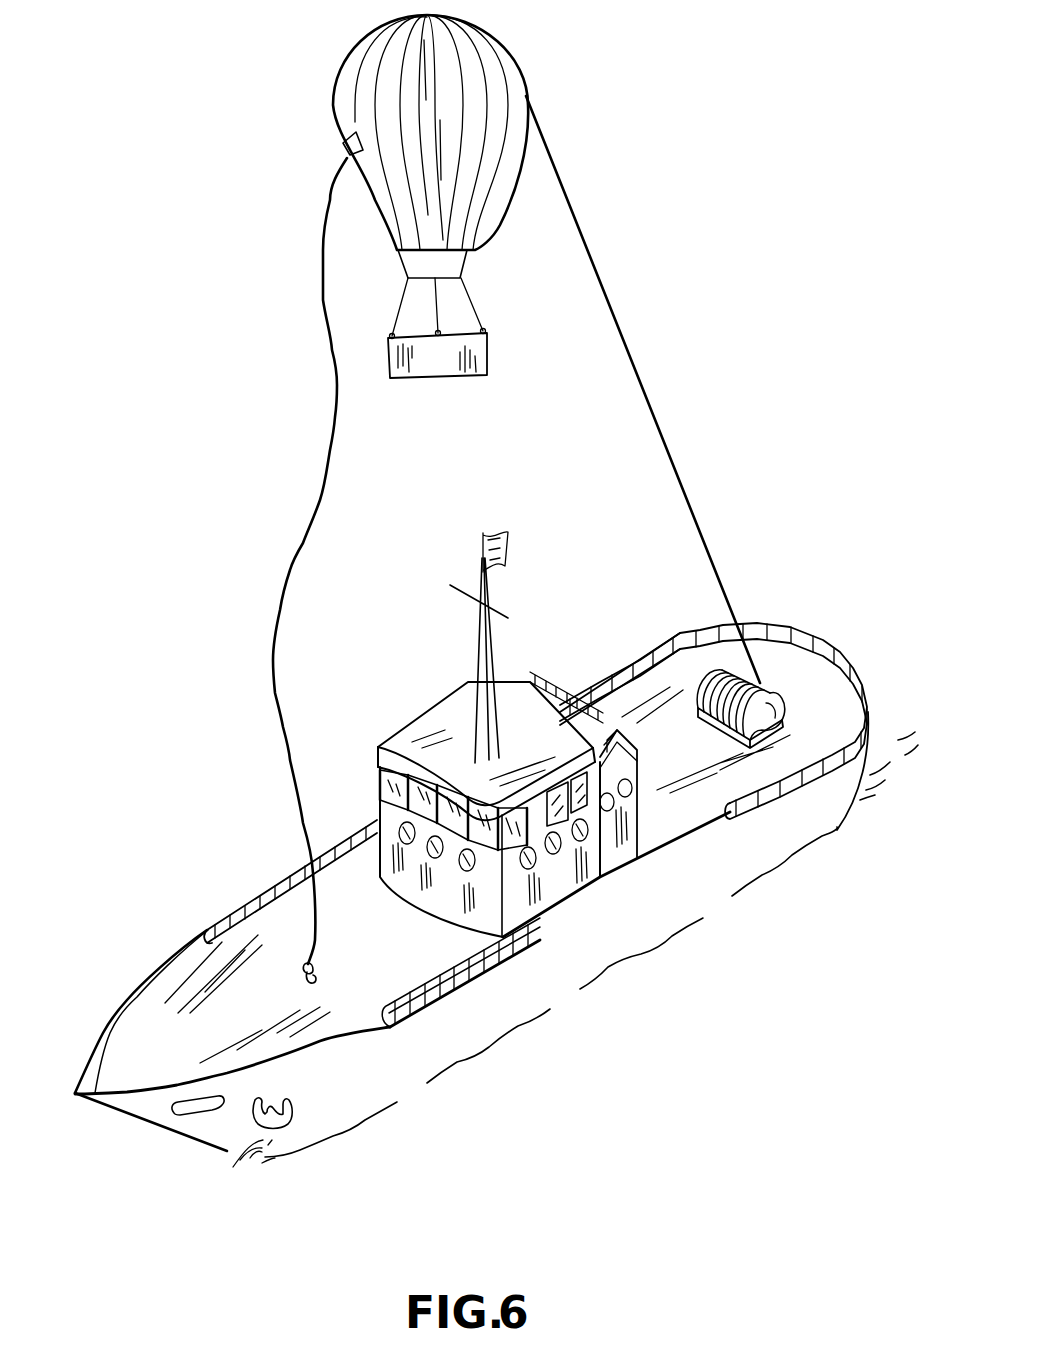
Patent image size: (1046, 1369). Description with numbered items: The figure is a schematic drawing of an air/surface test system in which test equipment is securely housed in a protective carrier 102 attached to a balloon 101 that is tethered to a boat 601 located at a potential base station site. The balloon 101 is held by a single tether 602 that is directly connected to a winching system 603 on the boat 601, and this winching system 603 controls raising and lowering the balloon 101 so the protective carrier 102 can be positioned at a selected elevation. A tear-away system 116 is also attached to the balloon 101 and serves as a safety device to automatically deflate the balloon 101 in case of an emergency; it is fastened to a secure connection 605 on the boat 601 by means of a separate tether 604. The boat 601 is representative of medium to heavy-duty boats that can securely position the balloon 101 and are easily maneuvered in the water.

The balloon 101 is at (510, 63).
The protective carrier 102 is at (488, 353).
The tear-away system 116 is at (345, 143).
The boat 601 is at (227, 1120).
The single tether 602 is at (645, 388).
The winching system 603 is at (765, 720).
The tether 604 is at (322, 418).
The secure connection 605 is at (305, 966).